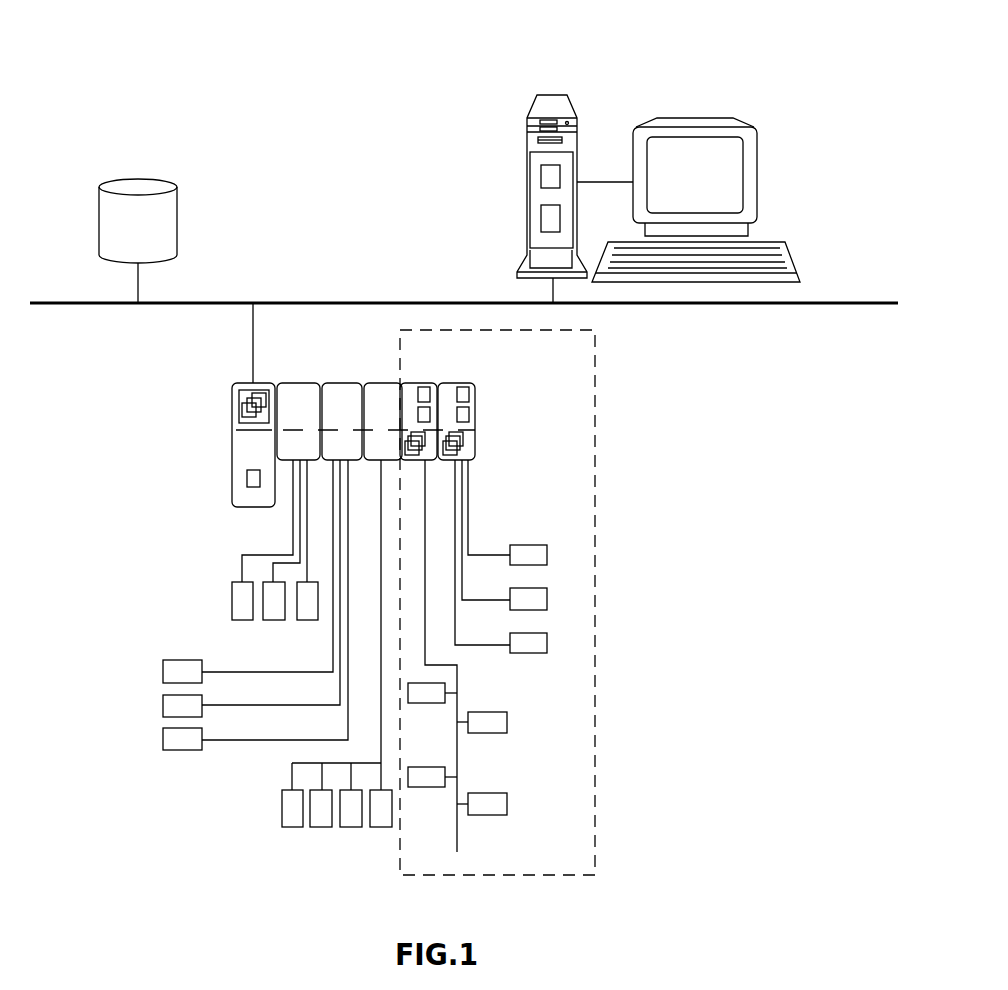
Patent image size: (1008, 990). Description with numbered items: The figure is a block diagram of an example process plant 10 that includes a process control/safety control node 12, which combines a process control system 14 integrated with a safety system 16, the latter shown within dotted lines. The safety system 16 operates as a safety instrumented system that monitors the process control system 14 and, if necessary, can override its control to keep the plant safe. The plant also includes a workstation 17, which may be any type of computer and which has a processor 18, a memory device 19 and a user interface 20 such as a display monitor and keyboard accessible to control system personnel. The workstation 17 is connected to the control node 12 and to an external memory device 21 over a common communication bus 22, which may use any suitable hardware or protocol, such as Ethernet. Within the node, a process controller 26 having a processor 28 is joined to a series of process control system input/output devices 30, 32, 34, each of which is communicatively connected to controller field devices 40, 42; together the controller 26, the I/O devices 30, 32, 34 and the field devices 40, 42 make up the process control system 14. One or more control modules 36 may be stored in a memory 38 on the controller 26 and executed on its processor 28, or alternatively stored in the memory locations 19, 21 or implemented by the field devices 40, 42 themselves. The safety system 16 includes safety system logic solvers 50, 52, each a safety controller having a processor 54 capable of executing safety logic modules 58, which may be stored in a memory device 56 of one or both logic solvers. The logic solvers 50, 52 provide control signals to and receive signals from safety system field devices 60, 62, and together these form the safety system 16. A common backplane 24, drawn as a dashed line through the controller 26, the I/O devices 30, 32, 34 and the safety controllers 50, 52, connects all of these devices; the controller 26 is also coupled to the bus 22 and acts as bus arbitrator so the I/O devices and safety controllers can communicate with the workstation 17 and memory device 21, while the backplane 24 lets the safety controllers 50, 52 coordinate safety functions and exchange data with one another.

The process plant 10 is at (217, 45).
The process control/safety control node 12 is at (157, 390).
The process control system 14 is at (125, 605).
The safety system 16 is at (597, 745).
The workstation 17 is at (527, 124).
The processor 18 is at (541, 170).
The memory device 19 is at (541, 217).
The user interface 20 is at (778, 170).
The external memory device 21 is at (138, 177).
The communication bus 22 is at (853, 302).
The backplane 24 is at (250, 430).
The process controller 26 is at (249, 508).
The processor 28 is at (247, 480).
The process control system input/output device 30 is at (297, 383).
The process control system input/output device 32 is at (344, 383).
The process control system input/output device 34 is at (381, 383).
The control module 36 is at (245, 408).
The memory 38 is at (241, 388).
The controller field device 40 is at (243, 622).
The controller field device 42 is at (293, 829).
The safety system logic solver 50 is at (415, 383).
The safety system logic solver 52 is at (461, 383).
The processor 54 is at (429, 391).
The memory device 56 is at (431, 413).
The safety logic module 58 is at (408, 453).
The safety system field device 60 is at (548, 555).
The safety system field device 62 is at (422, 705).